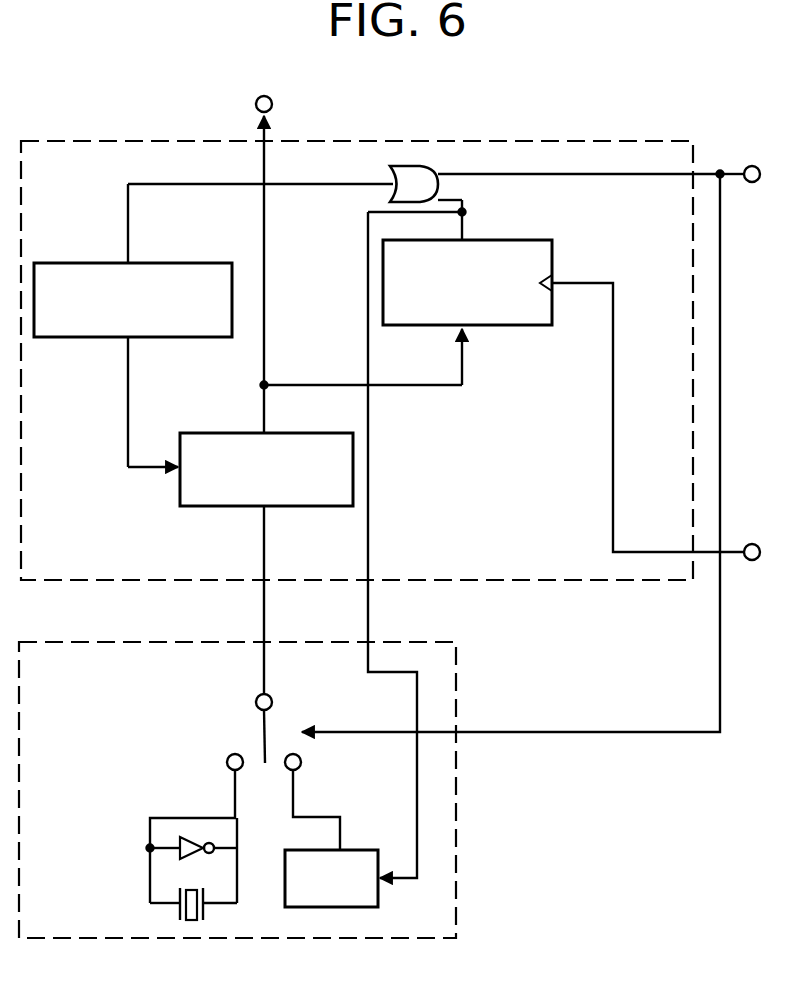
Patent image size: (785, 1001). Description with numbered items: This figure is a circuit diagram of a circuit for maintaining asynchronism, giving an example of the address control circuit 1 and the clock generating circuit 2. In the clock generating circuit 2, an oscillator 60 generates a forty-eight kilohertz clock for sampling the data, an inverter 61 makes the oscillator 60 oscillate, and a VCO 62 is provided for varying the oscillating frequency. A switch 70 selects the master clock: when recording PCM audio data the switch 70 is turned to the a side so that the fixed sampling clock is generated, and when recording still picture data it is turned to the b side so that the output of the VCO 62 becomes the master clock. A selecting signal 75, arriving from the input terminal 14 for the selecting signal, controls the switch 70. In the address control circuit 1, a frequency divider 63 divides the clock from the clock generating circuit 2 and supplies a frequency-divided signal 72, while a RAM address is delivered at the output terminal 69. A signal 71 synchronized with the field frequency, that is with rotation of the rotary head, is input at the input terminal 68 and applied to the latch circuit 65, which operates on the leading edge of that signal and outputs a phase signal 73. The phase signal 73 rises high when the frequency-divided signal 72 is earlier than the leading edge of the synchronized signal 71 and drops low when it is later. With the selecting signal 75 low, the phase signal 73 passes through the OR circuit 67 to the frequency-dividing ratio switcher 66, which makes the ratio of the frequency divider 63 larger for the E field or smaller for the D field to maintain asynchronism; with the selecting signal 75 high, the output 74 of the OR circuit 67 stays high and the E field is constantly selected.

The address control circuit 1 is at (652, 593).
The clock generating circuit 2 is at (462, 846).
The input terminal for a selecting signal 14 is at (752, 183).
The oscillator 60 is at (178, 930).
The inverter 61 is at (193, 837).
The VCO 62 is at (380, 896).
The frequency divider 63 is at (312, 507).
The latch circuit 65 is at (520, 326).
The frequency-dividing ratio switcher 66 is at (185, 338).
The OR circuit 67 is at (401, 168).
The input terminal 68 is at (752, 561).
The output terminal 69 is at (273, 104).
The switch 70 is at (641, 176).
The synchronized signal 71 is at (614, 432).
The frequency-divided signal 72 is at (430, 386).
The phase signal 73 is at (467, 214).
The output of the OR circuit 74 is at (300, 186).
The selecting signal 75 is at (503, 731).